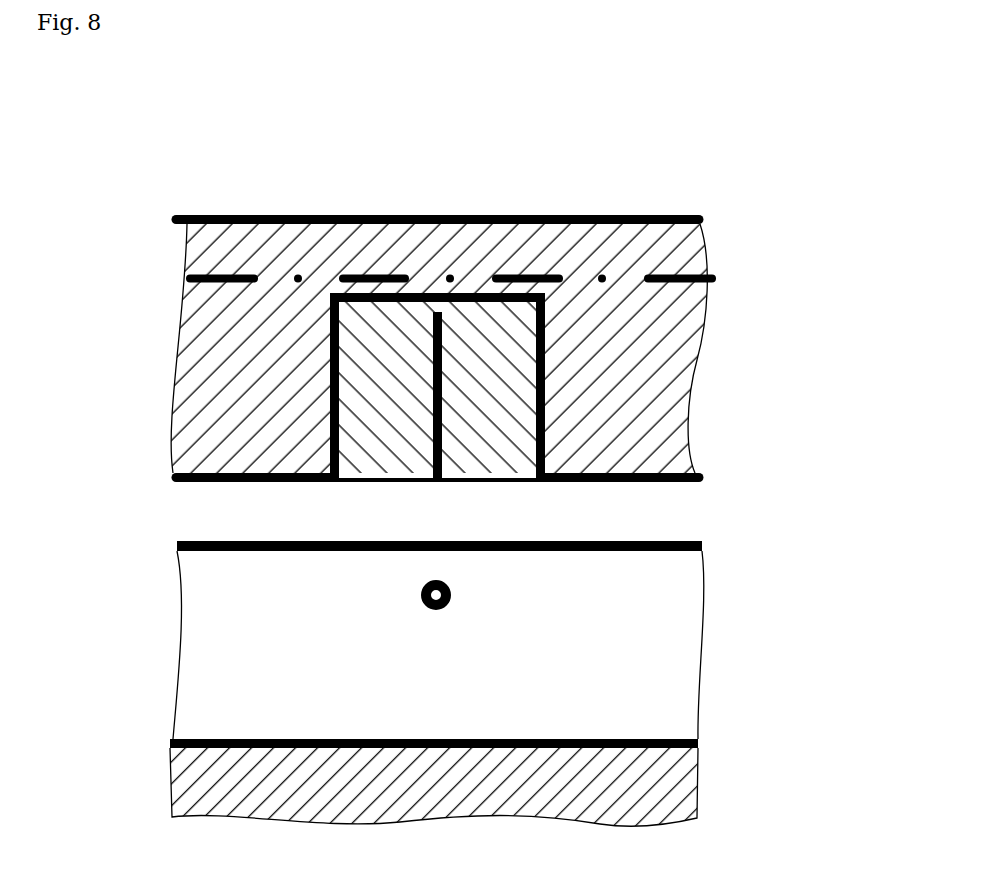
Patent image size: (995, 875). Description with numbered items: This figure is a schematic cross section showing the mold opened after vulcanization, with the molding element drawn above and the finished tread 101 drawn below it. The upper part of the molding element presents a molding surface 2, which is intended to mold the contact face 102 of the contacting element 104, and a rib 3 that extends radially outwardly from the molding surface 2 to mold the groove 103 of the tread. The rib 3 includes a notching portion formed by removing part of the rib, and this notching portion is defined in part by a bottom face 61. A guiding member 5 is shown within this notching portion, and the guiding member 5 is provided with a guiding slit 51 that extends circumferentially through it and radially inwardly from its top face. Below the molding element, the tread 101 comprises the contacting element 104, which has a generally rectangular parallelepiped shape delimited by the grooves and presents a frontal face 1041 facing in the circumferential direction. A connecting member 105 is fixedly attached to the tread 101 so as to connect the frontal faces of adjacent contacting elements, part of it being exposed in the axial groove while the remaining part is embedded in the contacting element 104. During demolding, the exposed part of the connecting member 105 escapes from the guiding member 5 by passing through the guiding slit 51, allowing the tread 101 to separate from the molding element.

The molding surface 2 is at (225, 285).
The rib 3 is at (232, 423).
The guiding member 5 is at (408, 335).
The guiding slit 51 is at (445, 367).
The bottom face 61 is at (332, 339).
The tread 101 is at (741, 561).
The contact face 102 is at (272, 540).
The groove 103 is at (212, 637).
The contacting element 104 is at (660, 663).
The frontal face 1041 is at (325, 648).
The connecting member 105 is at (452, 594).